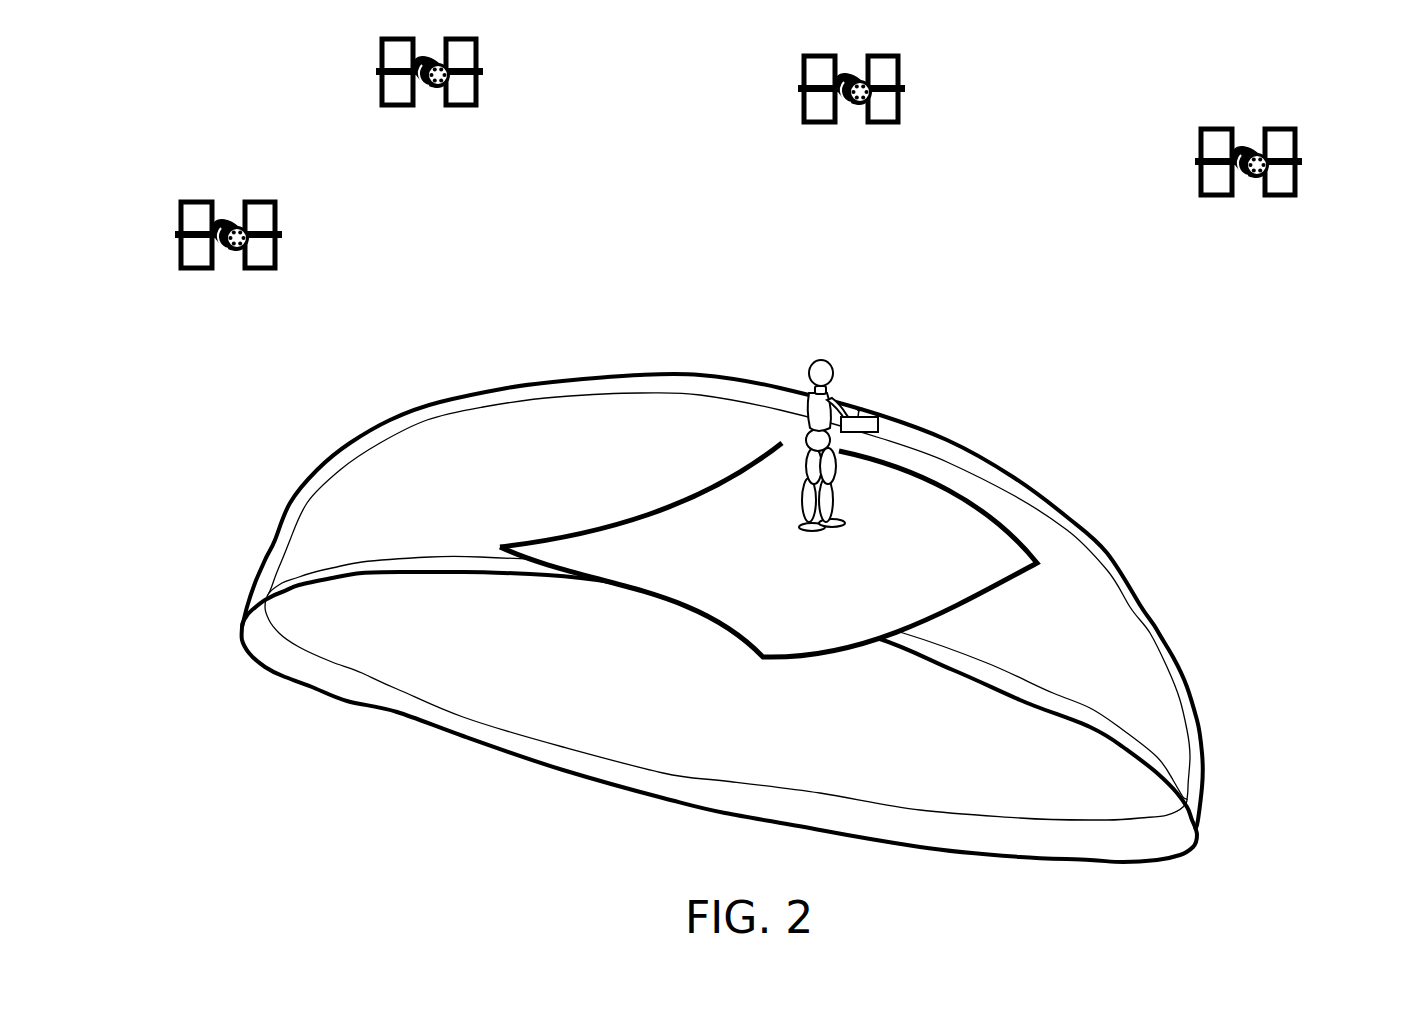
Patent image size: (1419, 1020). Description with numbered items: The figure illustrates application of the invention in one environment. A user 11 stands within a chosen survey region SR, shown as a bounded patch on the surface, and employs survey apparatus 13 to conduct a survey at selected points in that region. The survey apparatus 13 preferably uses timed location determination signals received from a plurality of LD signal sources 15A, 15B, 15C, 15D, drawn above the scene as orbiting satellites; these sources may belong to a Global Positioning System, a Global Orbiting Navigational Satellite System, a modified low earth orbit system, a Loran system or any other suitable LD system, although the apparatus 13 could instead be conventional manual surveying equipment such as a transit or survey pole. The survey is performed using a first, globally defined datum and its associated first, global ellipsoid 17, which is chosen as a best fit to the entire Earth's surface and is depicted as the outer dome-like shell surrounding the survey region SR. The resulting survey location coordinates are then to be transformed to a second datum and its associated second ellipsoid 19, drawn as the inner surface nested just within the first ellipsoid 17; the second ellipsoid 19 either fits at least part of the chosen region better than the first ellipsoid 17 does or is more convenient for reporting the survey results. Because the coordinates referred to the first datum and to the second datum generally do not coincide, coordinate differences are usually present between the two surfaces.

The user 11 is at (822, 375).
The survey apparatus 13 is at (870, 422).
The LD signal source 15A is at (260, 222).
The LD signal source 15B is at (463, 90).
The LD signal source 15C is at (887, 105).
The LD signal source 15D is at (1285, 177).
The survey region SR is at (970, 547).
The first (global) ellipsoid 17 is at (1112, 557).
The second ellipsoid 19 is at (1143, 613).